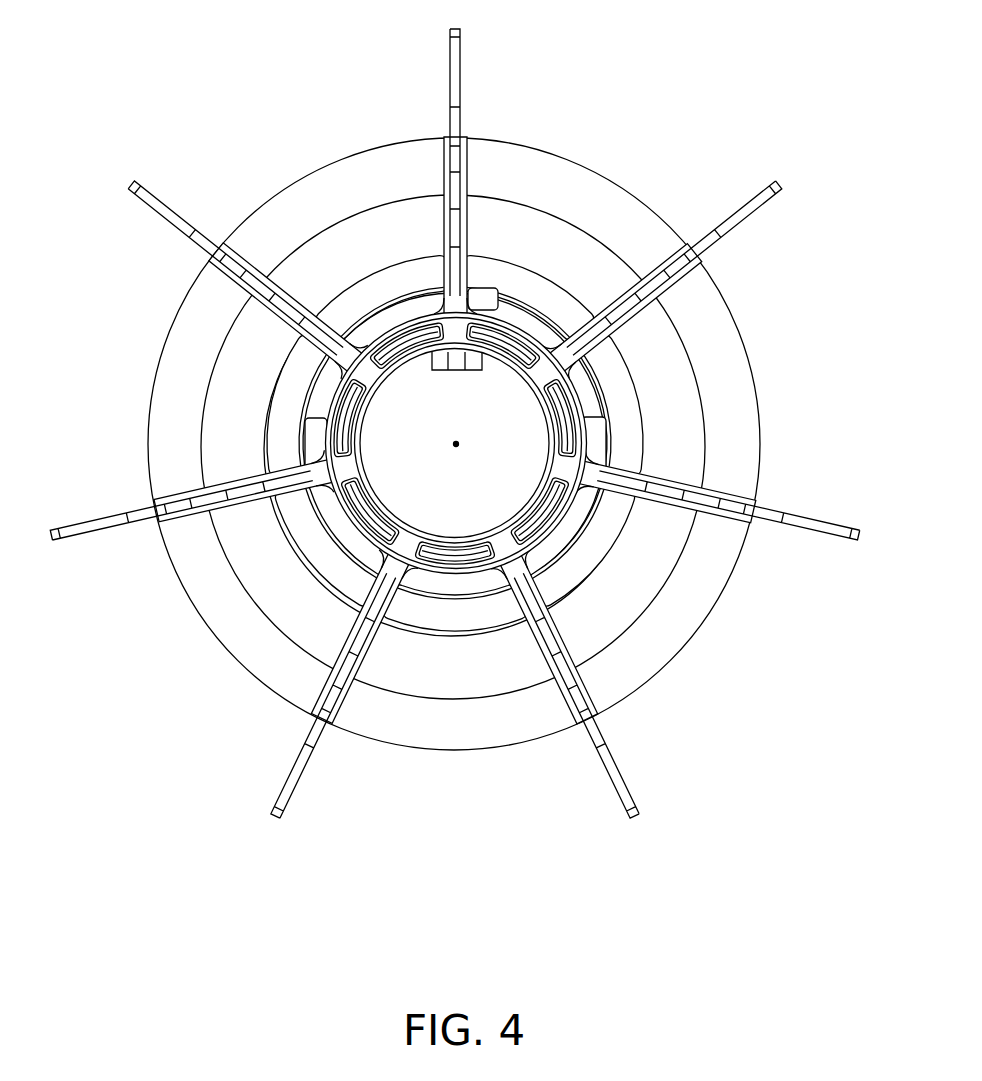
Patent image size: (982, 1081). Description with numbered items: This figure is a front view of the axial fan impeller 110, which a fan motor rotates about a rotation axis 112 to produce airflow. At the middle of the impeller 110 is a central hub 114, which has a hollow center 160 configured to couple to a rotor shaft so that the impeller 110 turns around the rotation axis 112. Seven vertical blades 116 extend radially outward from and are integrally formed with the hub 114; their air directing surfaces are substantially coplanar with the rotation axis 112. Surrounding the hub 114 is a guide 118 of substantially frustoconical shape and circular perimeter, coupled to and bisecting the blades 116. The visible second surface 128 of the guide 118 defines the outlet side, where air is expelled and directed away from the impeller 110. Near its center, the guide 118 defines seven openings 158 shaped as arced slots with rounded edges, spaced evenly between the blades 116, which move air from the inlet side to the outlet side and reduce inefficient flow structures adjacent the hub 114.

The impeller 110 is at (454, 415).
The rotation axis 112 is at (453, 447).
The central hub 114 is at (568, 410).
The vertical blades 116 is at (757, 192).
The guide 118 is at (457, 742).
The second surface 128 is at (631, 664).
The openings 158 is at (599, 544).
The hollow center 160 is at (481, 428).